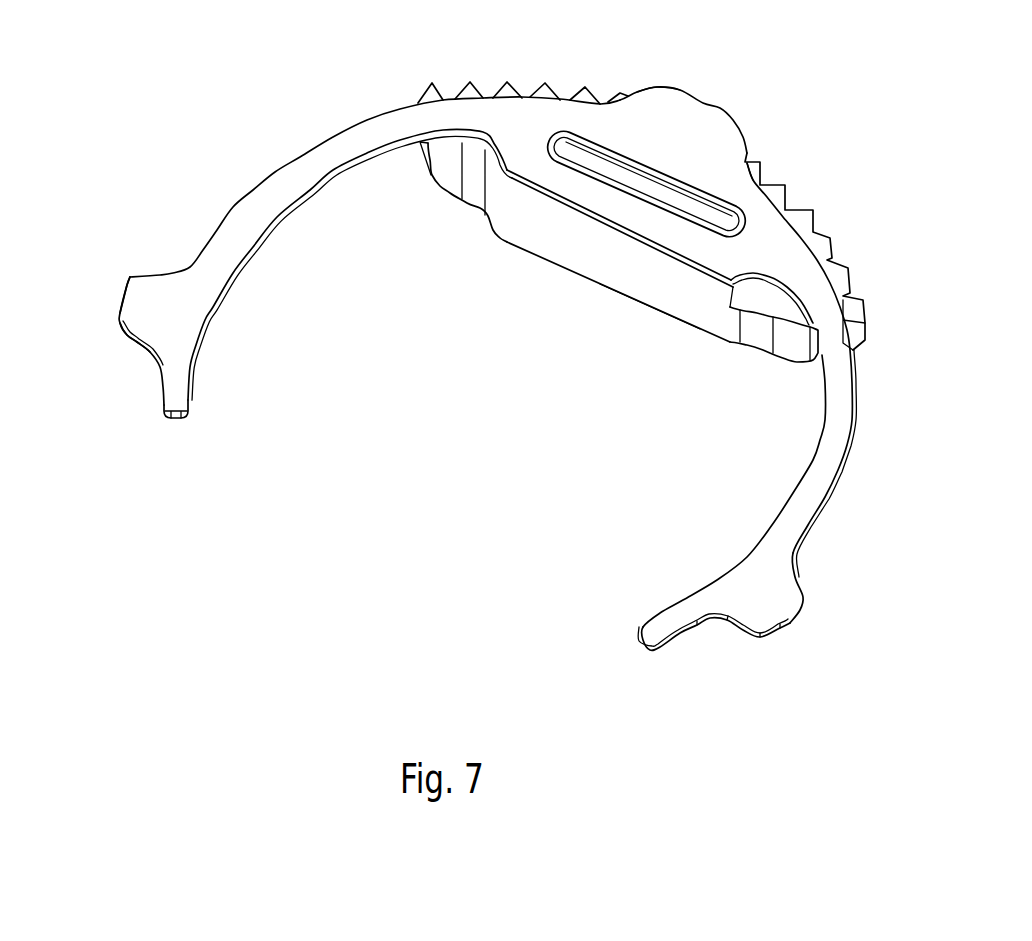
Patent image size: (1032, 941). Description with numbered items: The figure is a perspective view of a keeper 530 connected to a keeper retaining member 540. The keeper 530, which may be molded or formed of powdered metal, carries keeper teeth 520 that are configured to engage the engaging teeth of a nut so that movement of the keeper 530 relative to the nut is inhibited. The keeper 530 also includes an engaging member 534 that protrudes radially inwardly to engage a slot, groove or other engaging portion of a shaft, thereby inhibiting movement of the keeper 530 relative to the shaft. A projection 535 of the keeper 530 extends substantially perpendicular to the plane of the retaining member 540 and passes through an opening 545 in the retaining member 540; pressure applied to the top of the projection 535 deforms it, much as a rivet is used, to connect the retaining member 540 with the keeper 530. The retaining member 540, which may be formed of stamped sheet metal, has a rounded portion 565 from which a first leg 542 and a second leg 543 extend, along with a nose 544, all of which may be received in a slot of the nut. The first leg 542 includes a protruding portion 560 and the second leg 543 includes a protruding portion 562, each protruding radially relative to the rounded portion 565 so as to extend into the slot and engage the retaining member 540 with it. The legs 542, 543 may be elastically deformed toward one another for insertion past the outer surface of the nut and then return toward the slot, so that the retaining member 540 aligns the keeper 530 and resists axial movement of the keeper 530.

The keeper teeth 520 is at (833, 240).
The keeper 530 is at (619, 267).
The engaging member 534 is at (657, 313).
The projection 535 is at (580, 150).
The keeper retaining member 540 is at (701, 131).
The first leg 542 is at (117, 323).
The second leg 543 is at (793, 627).
The nose 544 is at (675, 107).
The opening 545 is at (747, 220).
The protruding portion 560 is at (127, 280).
The protruding portion 562 is at (797, 580).
The rounded portion 565 is at (233, 207).